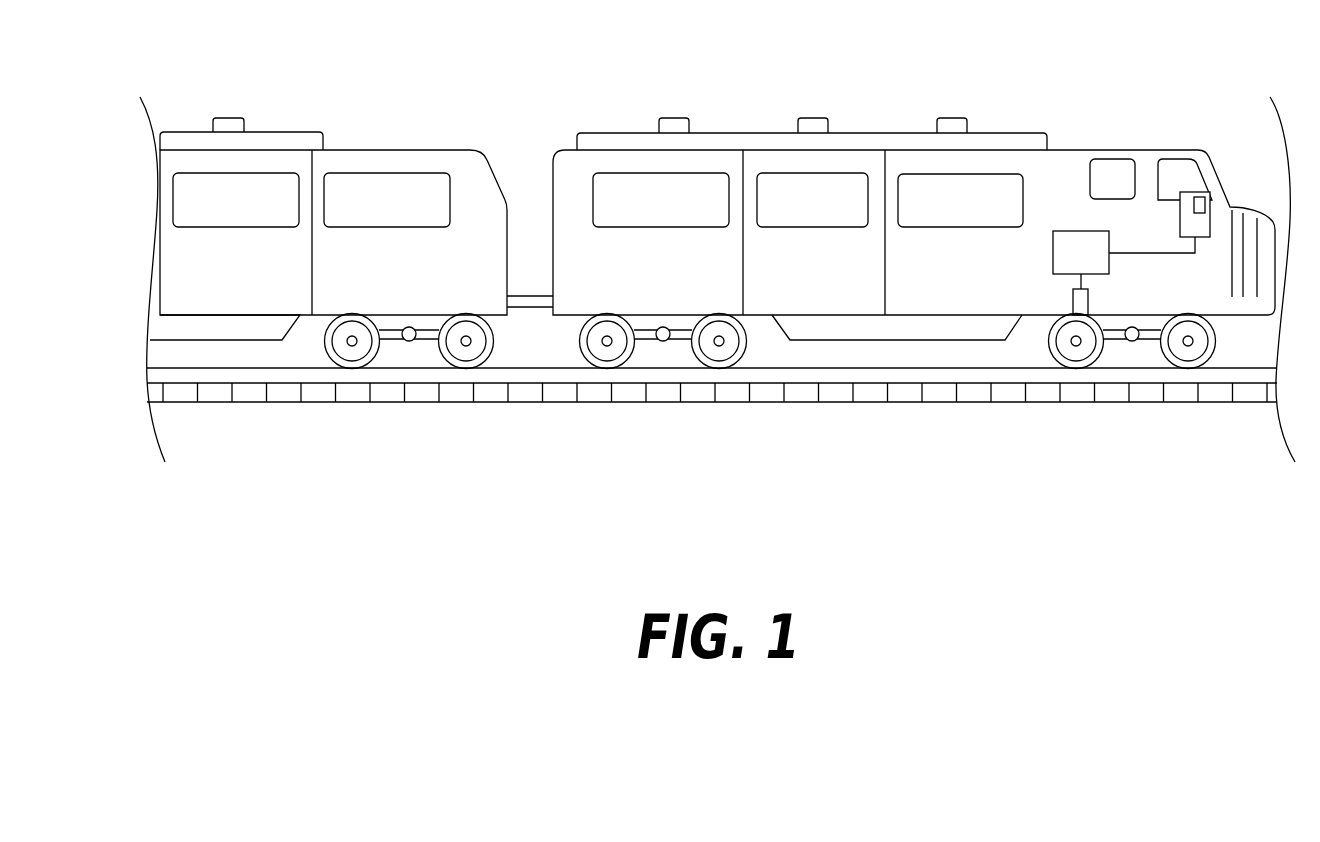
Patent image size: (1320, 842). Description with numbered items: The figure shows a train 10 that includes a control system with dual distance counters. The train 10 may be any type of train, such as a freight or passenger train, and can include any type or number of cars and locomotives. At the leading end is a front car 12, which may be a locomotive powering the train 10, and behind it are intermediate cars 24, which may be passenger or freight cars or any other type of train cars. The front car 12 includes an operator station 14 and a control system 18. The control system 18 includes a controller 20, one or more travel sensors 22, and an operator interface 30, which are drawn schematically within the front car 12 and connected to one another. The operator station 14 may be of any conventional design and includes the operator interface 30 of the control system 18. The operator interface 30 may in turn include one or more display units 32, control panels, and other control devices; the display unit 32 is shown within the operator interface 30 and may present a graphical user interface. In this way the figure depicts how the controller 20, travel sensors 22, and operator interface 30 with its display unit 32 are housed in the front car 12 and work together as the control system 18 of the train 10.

The train 10 is at (598, 47).
The front car 12 is at (1060, 172).
The operator station 14 is at (1190, 176).
The control system 18 is at (1136, 247).
The controller 20 is at (1060, 253).
The travel sensor 22 is at (1090, 303).
The intermediate cars 24 is at (378, 158).
The operator interface 30 is at (1185, 215).
The display unit 32 is at (1206, 206).